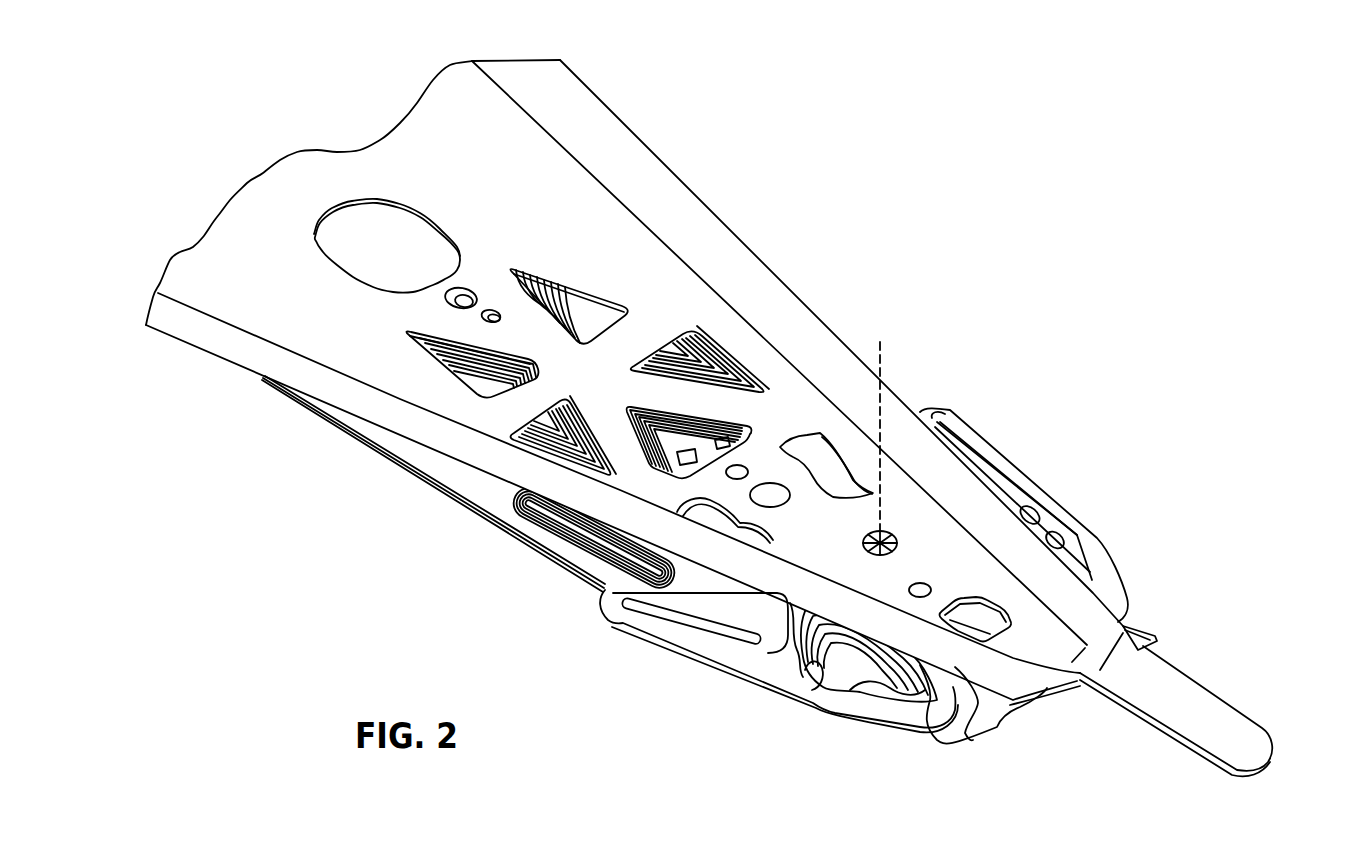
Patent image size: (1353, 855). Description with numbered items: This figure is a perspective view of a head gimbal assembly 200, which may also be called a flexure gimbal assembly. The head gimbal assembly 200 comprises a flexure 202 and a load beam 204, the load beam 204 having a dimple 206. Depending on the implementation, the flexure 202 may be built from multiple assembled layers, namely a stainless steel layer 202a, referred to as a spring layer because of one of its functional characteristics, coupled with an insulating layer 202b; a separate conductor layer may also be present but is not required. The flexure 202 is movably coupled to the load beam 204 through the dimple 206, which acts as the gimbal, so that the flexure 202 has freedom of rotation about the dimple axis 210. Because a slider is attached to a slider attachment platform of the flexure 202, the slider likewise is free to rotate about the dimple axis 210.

The head gimbal assembly 200 is at (709, 418).
The flexure 202 is at (695, 572).
The stainless steel layer 202a is at (690, 642).
The insulating layer 202b is at (571, 540).
The load beam 204 is at (698, 234).
The dimple 206 is at (900, 537).
The dimple axis 210 is at (882, 360).